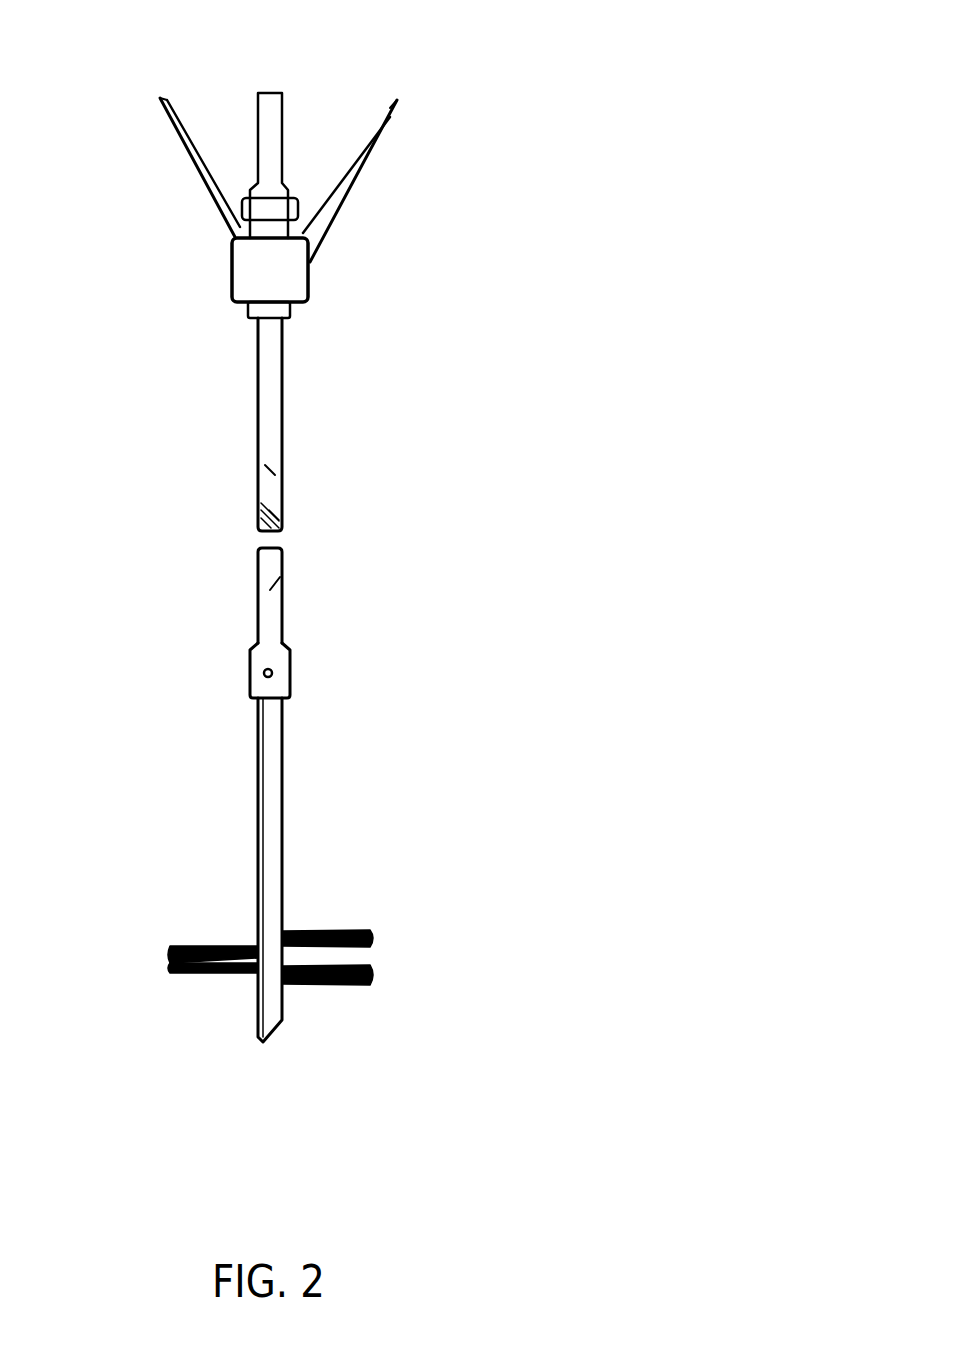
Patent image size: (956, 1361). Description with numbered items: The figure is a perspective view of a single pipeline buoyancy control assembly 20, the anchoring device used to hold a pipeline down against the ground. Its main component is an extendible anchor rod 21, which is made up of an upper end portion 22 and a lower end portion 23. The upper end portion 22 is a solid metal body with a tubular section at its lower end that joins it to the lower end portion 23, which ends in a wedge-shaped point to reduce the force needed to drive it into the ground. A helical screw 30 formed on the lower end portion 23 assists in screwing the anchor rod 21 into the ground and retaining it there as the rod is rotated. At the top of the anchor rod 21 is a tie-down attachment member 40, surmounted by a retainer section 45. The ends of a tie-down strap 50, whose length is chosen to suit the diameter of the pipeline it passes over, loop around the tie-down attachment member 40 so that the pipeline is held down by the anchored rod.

The pipeline buoyancy control assembly 20 is at (263, 1023).
The anchor rod 21 is at (511, 680).
The upper end portion 22 is at (265, 465).
The lower end portion 23 is at (270, 823).
The helical screw 30 is at (207, 947).
The tie-down attachment member 40 is at (252, 273).
The retainer section 45 is at (272, 142).
The strap 50 is at (188, 190).